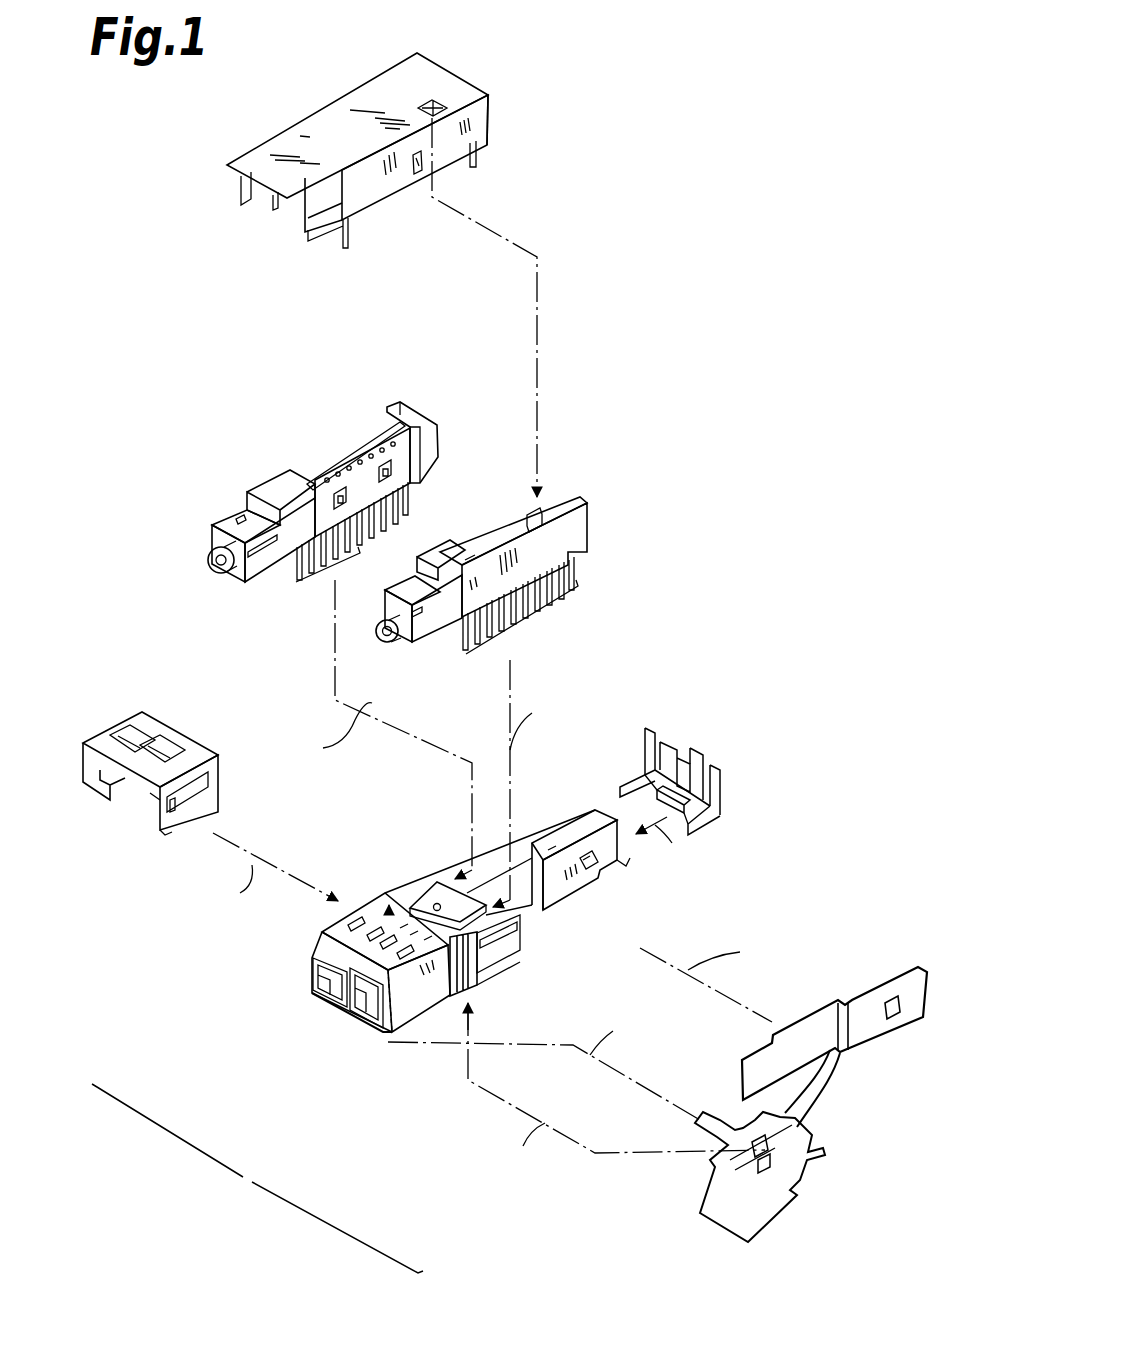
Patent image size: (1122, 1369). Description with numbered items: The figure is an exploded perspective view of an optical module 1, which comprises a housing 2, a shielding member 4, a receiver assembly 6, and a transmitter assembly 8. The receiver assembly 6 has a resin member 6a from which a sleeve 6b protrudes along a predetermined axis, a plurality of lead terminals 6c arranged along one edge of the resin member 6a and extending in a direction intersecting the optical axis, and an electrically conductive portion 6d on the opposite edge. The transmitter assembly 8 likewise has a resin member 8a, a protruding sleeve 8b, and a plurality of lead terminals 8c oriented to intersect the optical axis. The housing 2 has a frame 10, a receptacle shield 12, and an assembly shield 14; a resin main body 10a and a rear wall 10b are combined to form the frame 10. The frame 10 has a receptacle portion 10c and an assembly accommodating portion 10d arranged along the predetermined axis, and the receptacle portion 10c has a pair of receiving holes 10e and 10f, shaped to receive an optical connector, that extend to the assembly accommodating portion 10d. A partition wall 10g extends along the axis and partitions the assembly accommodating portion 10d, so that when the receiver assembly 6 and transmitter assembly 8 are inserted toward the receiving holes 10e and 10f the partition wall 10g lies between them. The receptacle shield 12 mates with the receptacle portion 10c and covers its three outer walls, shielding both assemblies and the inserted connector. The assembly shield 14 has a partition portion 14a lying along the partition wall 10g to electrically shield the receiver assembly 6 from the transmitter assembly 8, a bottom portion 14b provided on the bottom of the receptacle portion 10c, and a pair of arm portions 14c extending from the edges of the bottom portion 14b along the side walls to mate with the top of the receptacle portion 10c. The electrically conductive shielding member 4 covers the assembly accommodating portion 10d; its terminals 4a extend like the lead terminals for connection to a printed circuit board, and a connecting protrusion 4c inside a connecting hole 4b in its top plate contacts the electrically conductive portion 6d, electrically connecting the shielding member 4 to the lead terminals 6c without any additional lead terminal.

The optical module 1 is at (728, 193).
The housing 2 is at (247, 1179).
The shielding member 4 is at (343, 97).
The terminals 4a is at (480, 162).
The connecting hole 4b is at (482, 97).
The connecting protrusion 4c is at (432, 107).
The receiver assembly 6 is at (436, 622).
The resin member 6a is at (575, 517).
The sleeve 6b is at (386, 643).
The lead terminals 6c is at (520, 605).
The electrically conductive portion 6d is at (545, 515).
The transmitter assembly 8 is at (233, 510).
The resin member 8a is at (281, 470).
The sleeve 8b is at (213, 545).
The lead terminals 8c is at (352, 535).
The frame 10 is at (643, 755).
The resin main body 10a is at (428, 885).
The rear wall 10b is at (720, 779).
The receptacle portion 10c is at (450, 990).
The assembly accommodating portion 10d is at (757, 828).
The receiving hole 10e is at (326, 1004).
The receiving hole 10f is at (368, 1012).
The partition wall 10g is at (575, 832).
The receptacle shield 12 is at (182, 820).
The assembly shield 14 is at (717, 1193).
The partition portion 14a is at (858, 1028).
The bottom portion 14b is at (767, 1222).
The arm portions 14c is at (777, 1147).